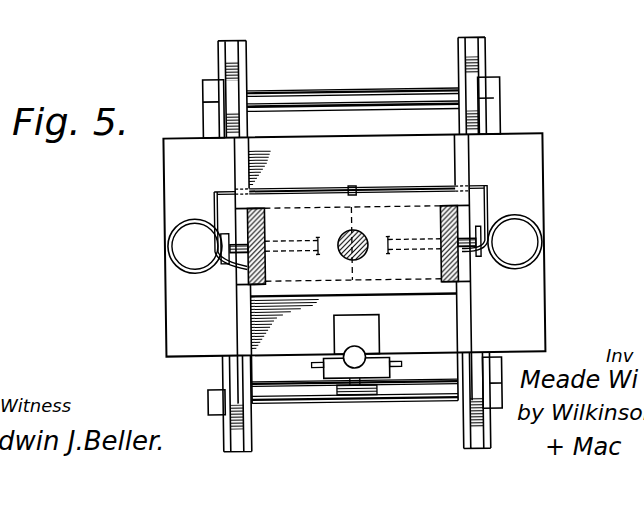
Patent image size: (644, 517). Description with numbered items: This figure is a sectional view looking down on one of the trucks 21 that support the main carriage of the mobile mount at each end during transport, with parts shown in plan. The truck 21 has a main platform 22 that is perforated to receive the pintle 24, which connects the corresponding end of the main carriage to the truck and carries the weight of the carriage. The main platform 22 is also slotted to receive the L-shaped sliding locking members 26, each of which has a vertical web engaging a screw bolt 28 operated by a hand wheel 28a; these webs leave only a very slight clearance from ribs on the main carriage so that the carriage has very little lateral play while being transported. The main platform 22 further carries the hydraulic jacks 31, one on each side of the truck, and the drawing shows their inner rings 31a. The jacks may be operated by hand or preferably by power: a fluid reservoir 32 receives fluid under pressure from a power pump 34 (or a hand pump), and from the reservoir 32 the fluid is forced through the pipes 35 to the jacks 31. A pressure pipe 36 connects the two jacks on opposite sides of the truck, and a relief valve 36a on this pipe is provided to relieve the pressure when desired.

The truck 21 is at (502, 90).
The main platform 22 is at (175, 333).
The pintle 24 is at (341, 233).
The L-shaped sliding locking member 26 is at (356, 280).
The screw bolt 28 is at (232, 260).
The hand wheel 28a is at (219, 230).
The hydraulic jack 31 is at (168, 238).
The inner ring 31a is at (174, 245).
The fluid reservoir 32 is at (360, 353).
The power pump 34 is at (379, 342).
The pipe 35 is at (310, 363).
The pressure pipe 36 is at (400, 186).
The relief valve 36a is at (354, 185).